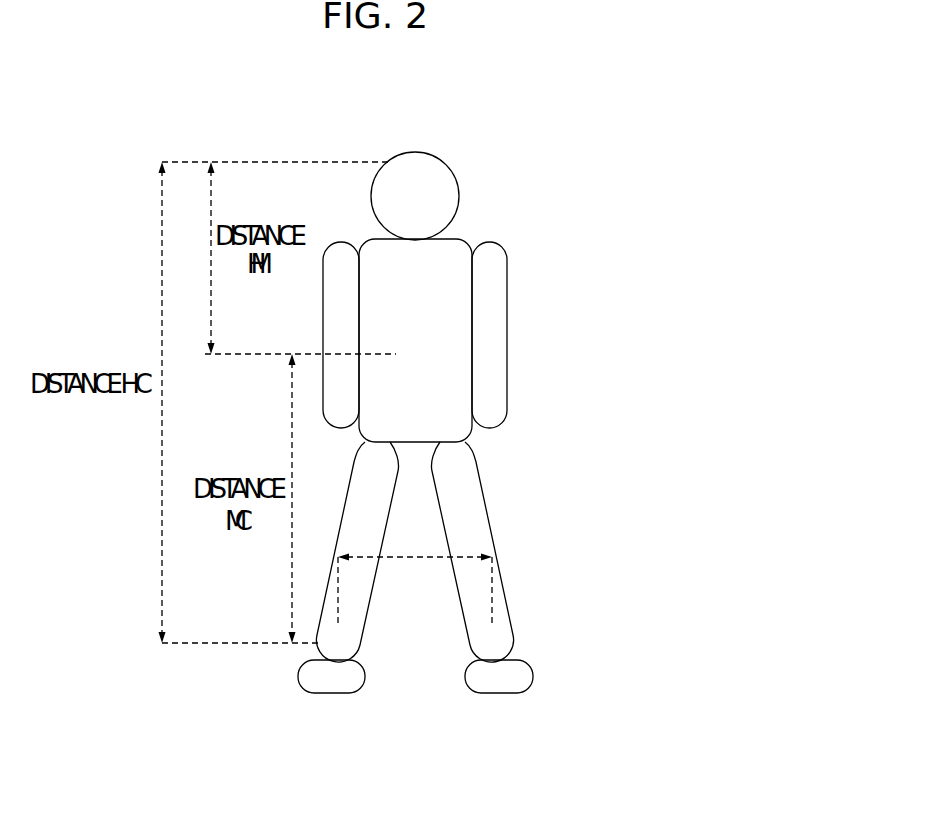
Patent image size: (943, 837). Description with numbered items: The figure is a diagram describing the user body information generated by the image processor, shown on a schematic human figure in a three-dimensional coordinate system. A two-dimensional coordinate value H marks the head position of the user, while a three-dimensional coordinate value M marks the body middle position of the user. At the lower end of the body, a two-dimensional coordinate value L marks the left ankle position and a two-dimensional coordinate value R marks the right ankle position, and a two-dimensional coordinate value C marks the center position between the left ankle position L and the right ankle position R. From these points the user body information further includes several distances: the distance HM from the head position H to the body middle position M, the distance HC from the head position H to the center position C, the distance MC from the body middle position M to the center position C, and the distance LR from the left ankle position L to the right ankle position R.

The head 2D coordinate value H is at (490, 175).
The body middle 3D coordinate value M is at (524, 354).
The left ankle 2D coordinate value L is at (263, 675).
The right ankle 2D coordinate value R is at (568, 670).
The center 2D coordinate value C is at (413, 763).